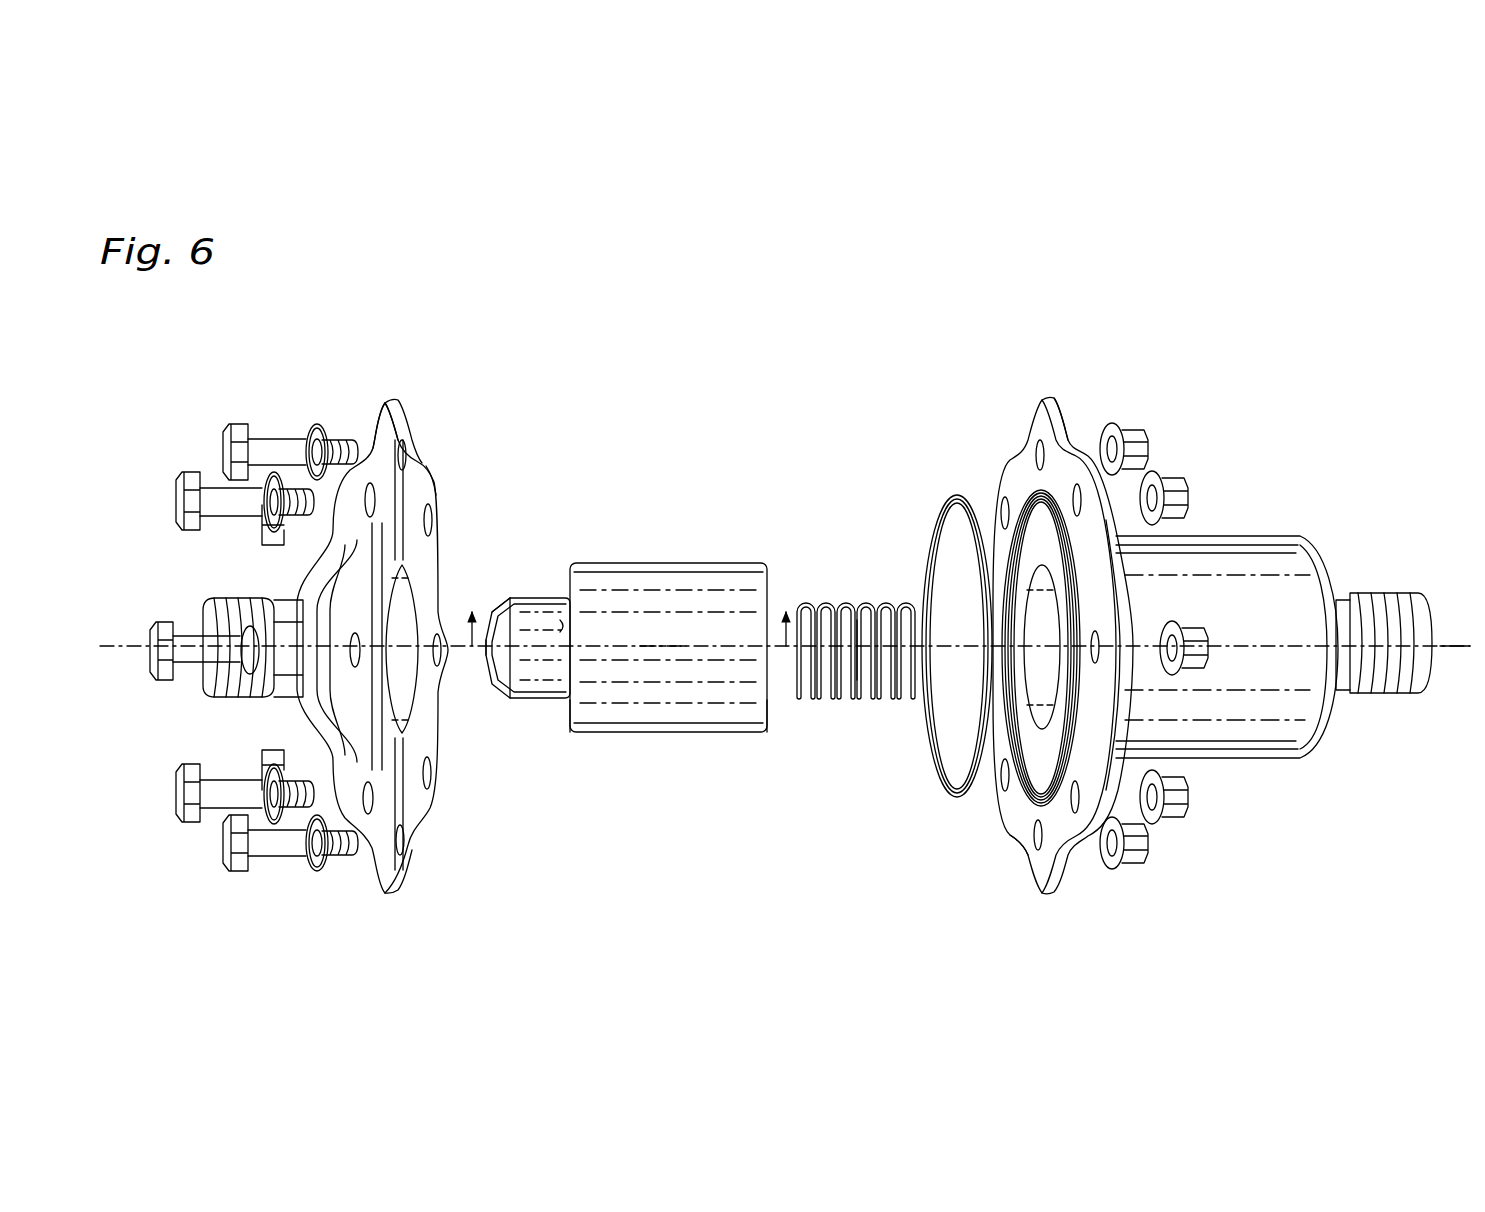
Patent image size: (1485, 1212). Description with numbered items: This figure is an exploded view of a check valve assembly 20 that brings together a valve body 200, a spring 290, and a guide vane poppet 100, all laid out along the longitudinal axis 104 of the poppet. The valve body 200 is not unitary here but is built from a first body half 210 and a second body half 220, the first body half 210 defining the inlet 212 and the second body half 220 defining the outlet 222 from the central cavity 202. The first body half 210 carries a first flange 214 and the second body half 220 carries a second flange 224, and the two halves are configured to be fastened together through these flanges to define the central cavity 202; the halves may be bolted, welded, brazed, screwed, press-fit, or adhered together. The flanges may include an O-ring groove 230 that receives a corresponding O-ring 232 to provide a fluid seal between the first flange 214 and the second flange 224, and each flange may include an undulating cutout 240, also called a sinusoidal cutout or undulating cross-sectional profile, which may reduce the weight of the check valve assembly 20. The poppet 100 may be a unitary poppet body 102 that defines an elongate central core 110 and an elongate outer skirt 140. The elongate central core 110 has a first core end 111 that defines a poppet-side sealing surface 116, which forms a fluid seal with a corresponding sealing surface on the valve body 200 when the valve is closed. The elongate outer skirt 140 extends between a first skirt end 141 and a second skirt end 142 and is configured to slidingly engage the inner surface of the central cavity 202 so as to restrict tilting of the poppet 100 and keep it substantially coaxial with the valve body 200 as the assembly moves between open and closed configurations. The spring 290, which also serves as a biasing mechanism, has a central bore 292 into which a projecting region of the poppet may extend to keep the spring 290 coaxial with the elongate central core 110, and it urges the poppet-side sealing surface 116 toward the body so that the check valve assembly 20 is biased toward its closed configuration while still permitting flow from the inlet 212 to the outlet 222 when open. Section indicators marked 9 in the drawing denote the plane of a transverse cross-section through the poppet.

The check valve assembly 20 is at (325, 298).
The guide vane poppet 100 is at (623, 491).
The unitary poppet body 102 is at (552, 596).
The longitudinal axis 104 is at (1462, 642).
The elongate central core 110 is at (532, 702).
The first core end 111 is at (484, 650).
The poppet-side sealing surface 116 is at (495, 617).
The elongate outer skirt 140 is at (649, 562).
The first skirt end 141 is at (569, 720).
The second skirt end 142 is at (770, 718).
The valve body 200 is at (247, 571).
The central cavity 202 is at (404, 682).
The first body half 210 is at (406, 424).
The inlet 212 is at (234, 622).
The first flange 214 is at (378, 412).
The second body half 220 is at (1032, 411).
The outlet 222 is at (1394, 648).
The second flange 224 is at (1062, 424).
The O-ring groove 230 is at (1040, 517).
The O-ring 232 is at (943, 528).
The undulating cutout 240 is at (438, 492).
The spring 290 is at (848, 599).
The central bore 292 is at (846, 649).
The section line 9 is at (631, 617).